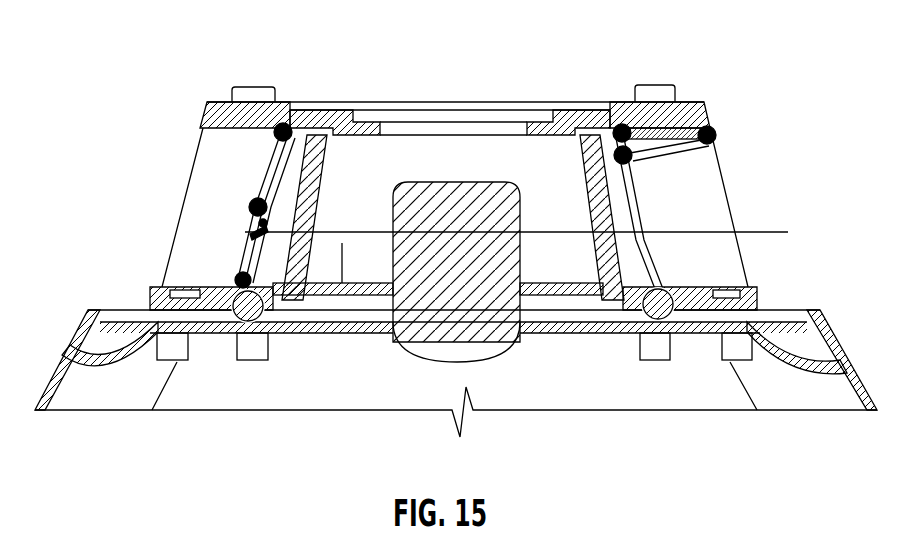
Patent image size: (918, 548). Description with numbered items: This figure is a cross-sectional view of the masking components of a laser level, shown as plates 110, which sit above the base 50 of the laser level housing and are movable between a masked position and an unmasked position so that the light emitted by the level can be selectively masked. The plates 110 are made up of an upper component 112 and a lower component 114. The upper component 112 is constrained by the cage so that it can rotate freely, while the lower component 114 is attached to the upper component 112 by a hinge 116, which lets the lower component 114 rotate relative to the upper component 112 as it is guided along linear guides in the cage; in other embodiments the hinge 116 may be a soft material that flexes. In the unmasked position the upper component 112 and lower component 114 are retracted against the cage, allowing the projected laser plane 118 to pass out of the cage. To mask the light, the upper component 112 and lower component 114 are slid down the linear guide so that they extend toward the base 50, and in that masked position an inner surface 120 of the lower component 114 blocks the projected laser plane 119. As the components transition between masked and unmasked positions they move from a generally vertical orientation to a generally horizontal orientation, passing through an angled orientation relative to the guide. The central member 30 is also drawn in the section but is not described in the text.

The central pin member 30 is at (502, 302).
The base 50 is at (78, 352).
The plates 110 is at (222, 198).
The upper component 112 is at (270, 163).
The lower component 114 is at (250, 243).
The hinge 116 is at (712, 127).
The projected laser plane 118 is at (788, 236).
The projected laser plane 119 is at (342, 243).
The inner surface 120 is at (292, 312).